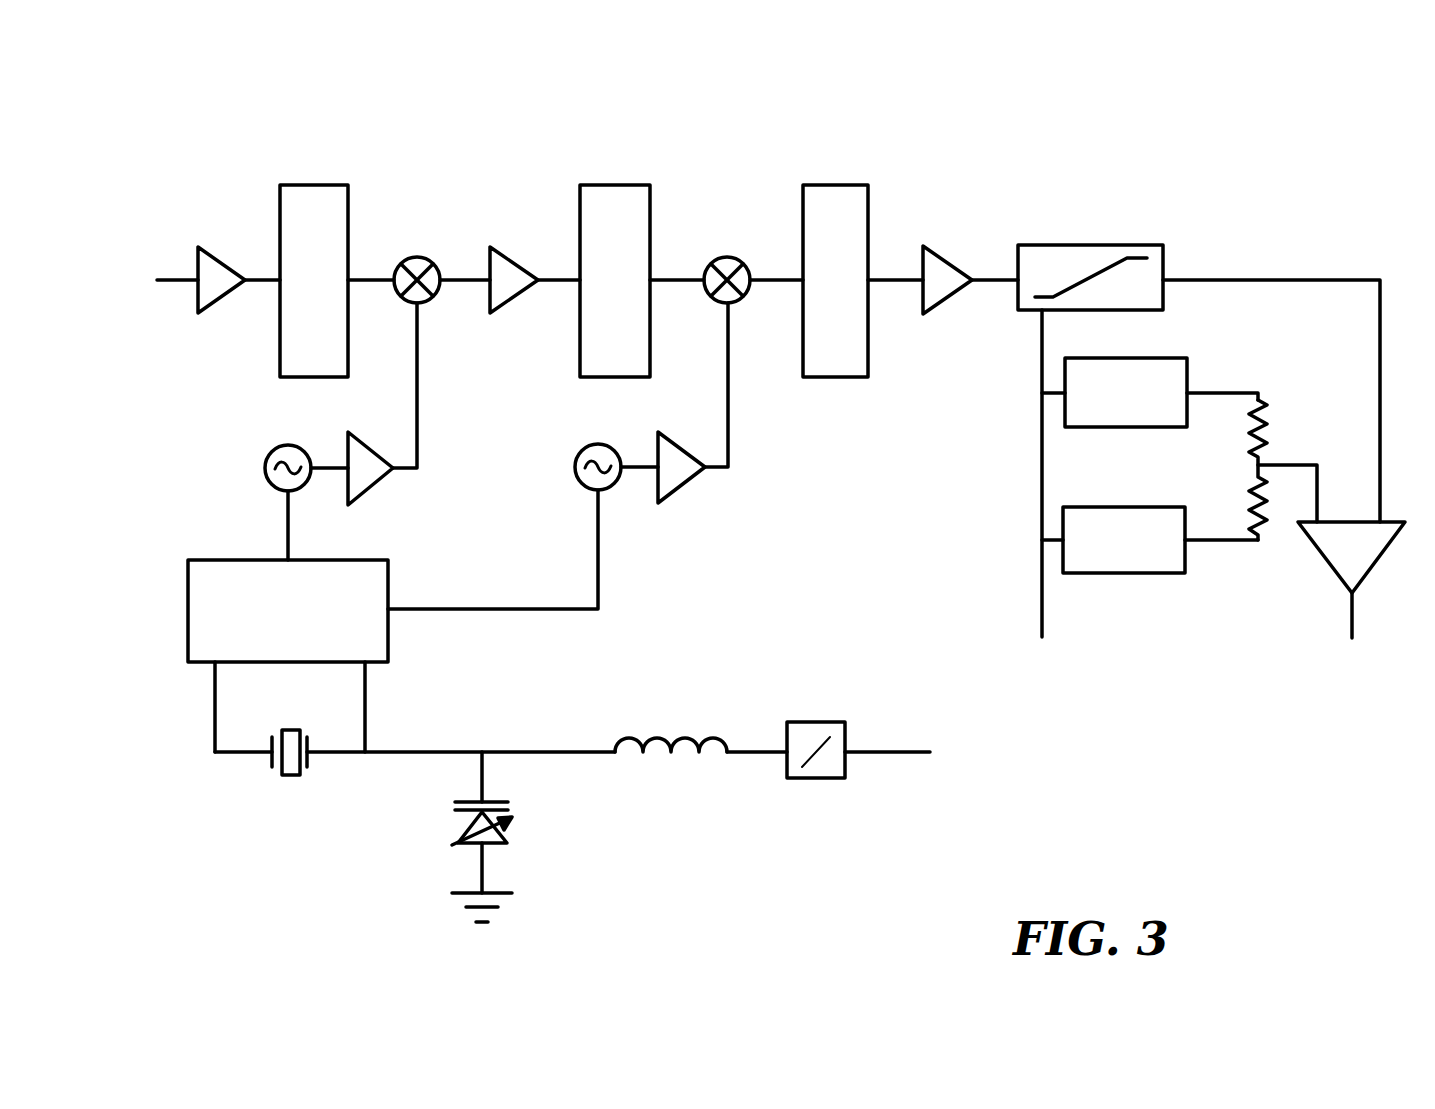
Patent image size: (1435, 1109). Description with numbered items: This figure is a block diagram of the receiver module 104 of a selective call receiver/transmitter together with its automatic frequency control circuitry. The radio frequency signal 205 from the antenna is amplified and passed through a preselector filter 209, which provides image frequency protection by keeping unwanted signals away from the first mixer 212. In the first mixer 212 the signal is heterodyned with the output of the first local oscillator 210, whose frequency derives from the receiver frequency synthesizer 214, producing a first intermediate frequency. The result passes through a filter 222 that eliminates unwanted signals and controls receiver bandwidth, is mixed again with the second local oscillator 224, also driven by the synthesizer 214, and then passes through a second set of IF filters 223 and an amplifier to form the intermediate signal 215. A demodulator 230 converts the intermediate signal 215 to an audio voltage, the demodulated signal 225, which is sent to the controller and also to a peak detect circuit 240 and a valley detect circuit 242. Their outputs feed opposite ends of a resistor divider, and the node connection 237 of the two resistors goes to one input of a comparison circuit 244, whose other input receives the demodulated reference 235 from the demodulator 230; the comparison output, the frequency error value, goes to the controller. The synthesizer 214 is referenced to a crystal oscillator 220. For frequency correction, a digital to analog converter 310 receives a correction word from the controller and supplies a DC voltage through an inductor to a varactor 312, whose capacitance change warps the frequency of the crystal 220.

The receiver module 104 is at (157, 156).
The radio frequency signal 205 is at (187, 279).
The preselector filter 209 is at (327, 184).
The first mixer 212 is at (418, 257).
The filter 222 is at (613, 184).
The second set of IF filters 223 is at (833, 184).
The intermediate signal 215 is at (1013, 270).
The demodulator 230 is at (1118, 245).
The demodulated reference 235 is at (1247, 278).
The demodulated signal 225 is at (1042, 343).
The peak detect circuit 240 is at (1173, 358).
The valley detect circuit 242 is at (1092, 573).
The node connection 237 is at (1277, 465).
The comparison circuit 244 is at (1323, 558).
The first local oscillator 210 is at (288, 444).
The second local oscillator 224 is at (597, 443).
The receiver frequency synthesizer 214 is at (237, 559).
The crystal oscillator 220 is at (287, 777).
The digital to analog converter 310 is at (823, 721).
The varactor 312 is at (457, 828).